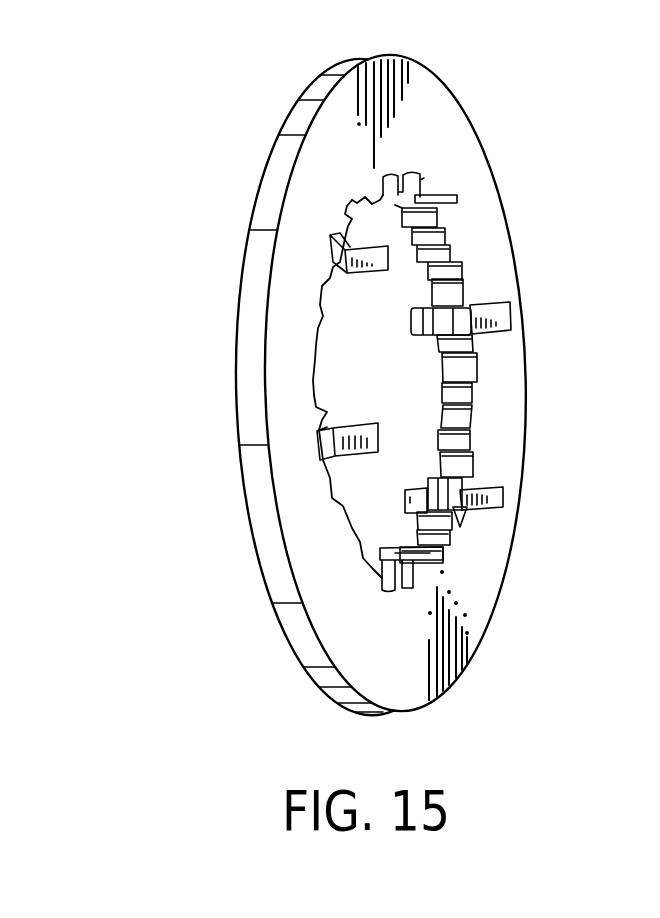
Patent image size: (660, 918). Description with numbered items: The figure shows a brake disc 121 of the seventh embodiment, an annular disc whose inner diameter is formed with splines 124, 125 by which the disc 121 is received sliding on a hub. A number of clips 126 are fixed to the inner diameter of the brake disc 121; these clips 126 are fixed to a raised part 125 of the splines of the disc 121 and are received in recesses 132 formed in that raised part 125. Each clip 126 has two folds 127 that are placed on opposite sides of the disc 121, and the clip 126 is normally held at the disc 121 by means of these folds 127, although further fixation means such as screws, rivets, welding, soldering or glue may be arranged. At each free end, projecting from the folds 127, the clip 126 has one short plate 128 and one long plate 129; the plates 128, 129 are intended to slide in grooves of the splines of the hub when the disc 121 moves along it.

The brake disc 121 is at (431, 383).
The spline 124 is at (470, 371).
The raised part of the splines 125 is at (462, 397).
The clip 126 is at (487, 385).
The fold 127 is at (473, 300).
The short plate 128 is at (412, 320).
The long plate 129 is at (488, 494).
The recess 132 is at (468, 418).